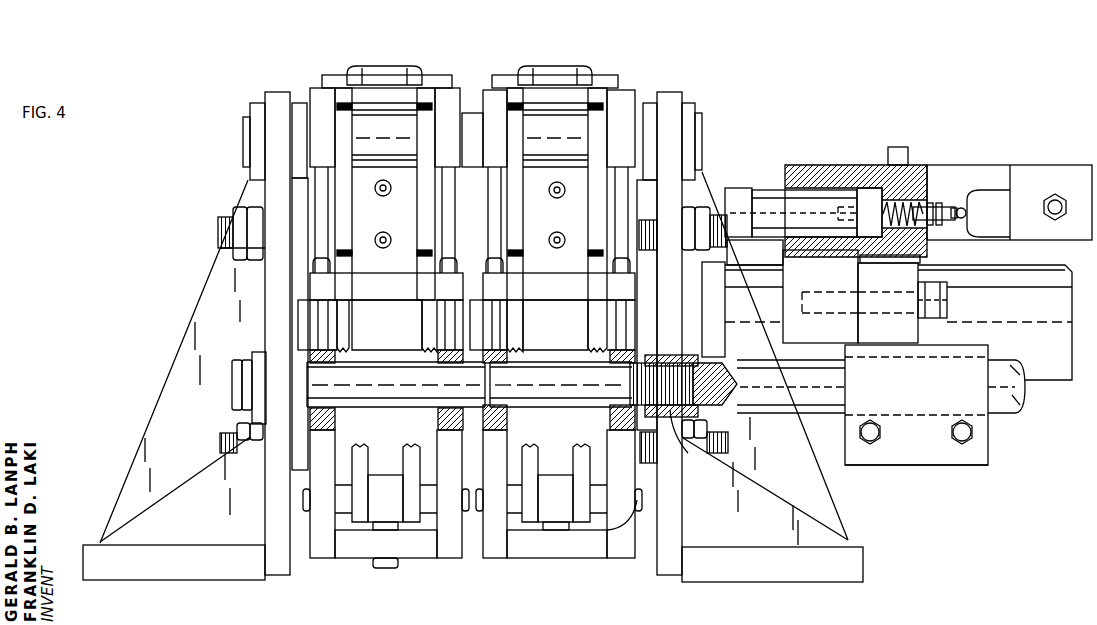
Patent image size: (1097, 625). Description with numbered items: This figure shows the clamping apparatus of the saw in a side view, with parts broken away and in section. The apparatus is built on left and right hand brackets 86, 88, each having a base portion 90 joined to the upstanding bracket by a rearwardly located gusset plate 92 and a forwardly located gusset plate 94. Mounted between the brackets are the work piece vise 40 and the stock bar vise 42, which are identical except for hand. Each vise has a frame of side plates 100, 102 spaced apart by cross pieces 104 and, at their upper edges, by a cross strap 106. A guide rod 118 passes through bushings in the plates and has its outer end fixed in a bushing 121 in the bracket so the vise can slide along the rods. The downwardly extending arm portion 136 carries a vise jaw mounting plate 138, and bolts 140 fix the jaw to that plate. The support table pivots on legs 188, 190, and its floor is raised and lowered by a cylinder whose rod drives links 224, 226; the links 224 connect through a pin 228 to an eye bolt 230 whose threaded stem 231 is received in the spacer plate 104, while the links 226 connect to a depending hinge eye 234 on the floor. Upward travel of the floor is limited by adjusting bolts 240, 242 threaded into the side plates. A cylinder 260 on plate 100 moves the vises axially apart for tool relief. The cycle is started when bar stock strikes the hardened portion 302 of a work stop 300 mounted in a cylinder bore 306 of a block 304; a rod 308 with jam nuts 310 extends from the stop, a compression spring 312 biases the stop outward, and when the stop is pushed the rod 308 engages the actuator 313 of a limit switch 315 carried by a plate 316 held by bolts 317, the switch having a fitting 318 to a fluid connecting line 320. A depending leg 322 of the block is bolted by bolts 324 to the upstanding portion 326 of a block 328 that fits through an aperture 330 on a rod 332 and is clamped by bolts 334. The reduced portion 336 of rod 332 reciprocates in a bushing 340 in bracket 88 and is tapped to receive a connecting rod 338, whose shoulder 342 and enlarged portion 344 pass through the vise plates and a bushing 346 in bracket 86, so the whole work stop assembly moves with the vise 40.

The stock bar vise 42 is at (373, 54).
The work piece vise 40 is at (599, 60).
The cross strap 106 is at (502, 77).
The guide rod 118 is at (470, 108).
The bushing 121 is at (257, 103).
The left hand bracket 86 is at (278, 98).
The right hand bracket 88 is at (667, 93).
The bolts 140 is at (383, 197).
The vise jaw mounting plate 138 is at (516, 217).
The downwardly extending arm portion 136 is at (596, 212).
The adjusting bolt 242 is at (321, 270).
The adjusting bolt 240 is at (447, 268).
The rearwardly extending leg of support table 188 is at (411, 325).
The depending hinge eye 234 is at (470, 325).
The rearwardly extending leg of support table 190 is at (537, 325).
The links 226 is at (425, 337).
The bushing 346 is at (262, 358).
The portion of increased diameter of connecting rod 344 is at (396, 384).
The shoulder 342 is at (483, 366).
The connecting rod 338 is at (561, 384).
The portion of reduced diameter of rod 336 is at (683, 360).
The bushing 340 is at (693, 442).
The rearwardly located gusset plate 92 is at (474, 358).
The forwardly located gusset plate 94 is at (474, 489).
The base portion 90 is at (473, 563).
The links 224 is at (414, 470).
The eye bolt 230 is at (470, 498).
The cross piece 104 is at (586, 556).
The side plate 100 is at (325, 560).
The side plate 102 is at (448, 560).
The threaded stem 231 is at (387, 569).
The pin 228 is at (622, 521).
The work stop 300 is at (768, 192).
The hardened portion 302 is at (735, 190).
The block 304 is at (822, 180).
The cylinder bore 306 is at (873, 190).
The bolts 317 is at (895, 147).
The compression spring 312 is at (920, 202).
The rod 308 is at (933, 200).
The plate 316 is at (985, 163).
The fluid connecting line 320 is at (1048, 198).
The actuator 313 is at (960, 207).
The limit switch 315 is at (1006, 213).
The fitting 318 is at (1061, 213).
The jam nuts 310 is at (937, 227).
The depending leg 322 is at (820, 296).
The upstanding portion of block 326 is at (888, 303).
The bolts 324 is at (948, 300).
The cylinder 260 is at (898, 322).
The aperture 330 is at (868, 357).
The rod 332 is at (881, 386).
The block 328 is at (916, 448).
The bolts 334 is at (884, 441).